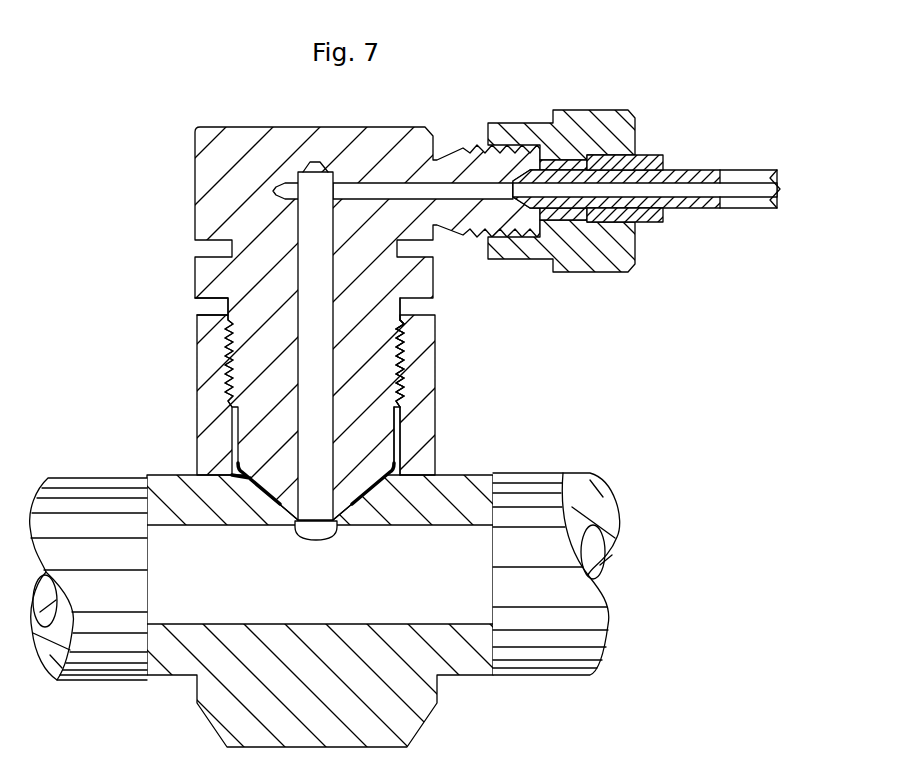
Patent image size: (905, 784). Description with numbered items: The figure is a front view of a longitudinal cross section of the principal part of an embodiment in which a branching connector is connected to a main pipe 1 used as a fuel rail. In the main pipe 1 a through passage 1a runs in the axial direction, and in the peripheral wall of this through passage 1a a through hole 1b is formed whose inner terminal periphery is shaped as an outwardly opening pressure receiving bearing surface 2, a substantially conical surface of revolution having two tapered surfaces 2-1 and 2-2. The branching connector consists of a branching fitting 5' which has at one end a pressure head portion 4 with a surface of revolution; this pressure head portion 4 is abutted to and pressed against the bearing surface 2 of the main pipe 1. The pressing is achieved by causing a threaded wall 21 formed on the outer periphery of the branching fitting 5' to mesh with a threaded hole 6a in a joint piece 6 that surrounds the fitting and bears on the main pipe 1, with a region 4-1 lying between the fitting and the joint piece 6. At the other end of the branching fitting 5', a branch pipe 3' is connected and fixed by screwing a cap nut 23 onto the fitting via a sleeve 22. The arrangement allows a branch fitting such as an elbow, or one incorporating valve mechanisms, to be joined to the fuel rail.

The main pipe 1 is at (90, 650).
The through passage 1a is at (468, 610).
The through hole 1b is at (320, 534).
The bearing surface 2 is at (362, 497).
The tapered surface 2-1 is at (247, 487).
The tapered surface 2-2 is at (273, 508).
The branch pipe 3' is at (646, 147).
The pressure head portion 4 is at (260, 437).
The annular gap 4-1 is at (420, 455).
The branching fitting 5' is at (446, 363).
The joint piece 6 is at (423, 390).
The threaded hole 6a is at (433, 333).
The threaded wall 21 is at (227, 313).
The sleeve 22 is at (655, 155).
The cap nut 23 is at (558, 127).